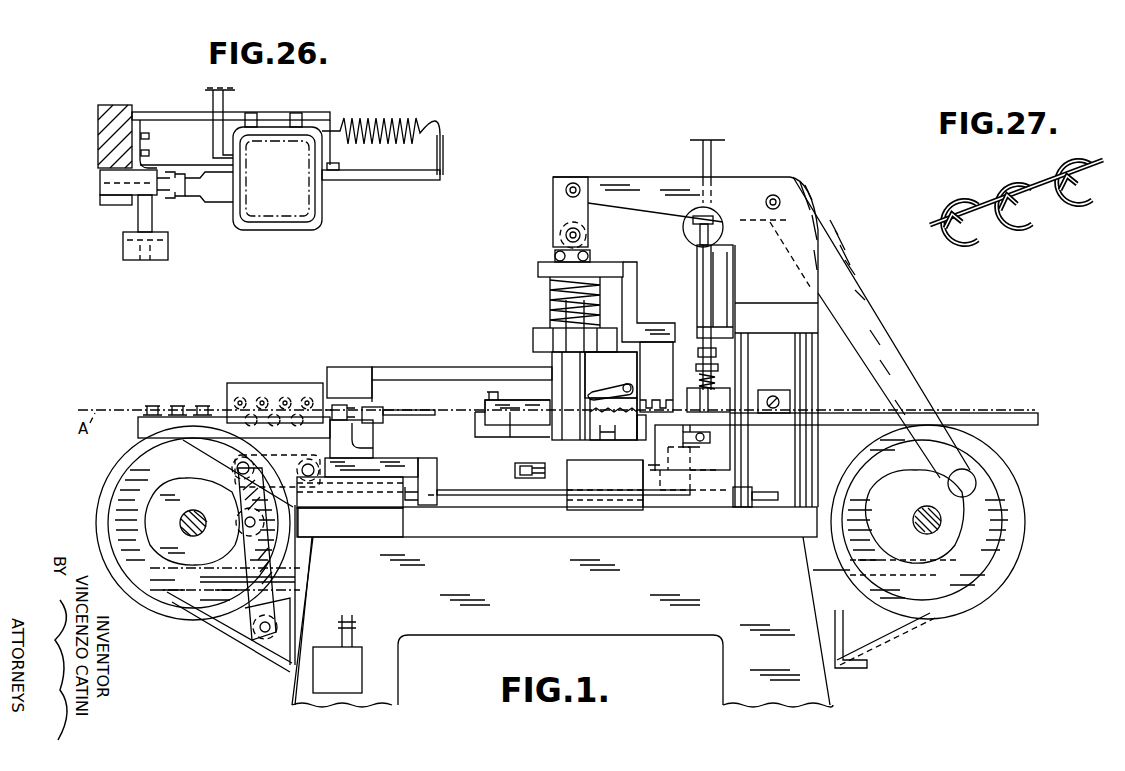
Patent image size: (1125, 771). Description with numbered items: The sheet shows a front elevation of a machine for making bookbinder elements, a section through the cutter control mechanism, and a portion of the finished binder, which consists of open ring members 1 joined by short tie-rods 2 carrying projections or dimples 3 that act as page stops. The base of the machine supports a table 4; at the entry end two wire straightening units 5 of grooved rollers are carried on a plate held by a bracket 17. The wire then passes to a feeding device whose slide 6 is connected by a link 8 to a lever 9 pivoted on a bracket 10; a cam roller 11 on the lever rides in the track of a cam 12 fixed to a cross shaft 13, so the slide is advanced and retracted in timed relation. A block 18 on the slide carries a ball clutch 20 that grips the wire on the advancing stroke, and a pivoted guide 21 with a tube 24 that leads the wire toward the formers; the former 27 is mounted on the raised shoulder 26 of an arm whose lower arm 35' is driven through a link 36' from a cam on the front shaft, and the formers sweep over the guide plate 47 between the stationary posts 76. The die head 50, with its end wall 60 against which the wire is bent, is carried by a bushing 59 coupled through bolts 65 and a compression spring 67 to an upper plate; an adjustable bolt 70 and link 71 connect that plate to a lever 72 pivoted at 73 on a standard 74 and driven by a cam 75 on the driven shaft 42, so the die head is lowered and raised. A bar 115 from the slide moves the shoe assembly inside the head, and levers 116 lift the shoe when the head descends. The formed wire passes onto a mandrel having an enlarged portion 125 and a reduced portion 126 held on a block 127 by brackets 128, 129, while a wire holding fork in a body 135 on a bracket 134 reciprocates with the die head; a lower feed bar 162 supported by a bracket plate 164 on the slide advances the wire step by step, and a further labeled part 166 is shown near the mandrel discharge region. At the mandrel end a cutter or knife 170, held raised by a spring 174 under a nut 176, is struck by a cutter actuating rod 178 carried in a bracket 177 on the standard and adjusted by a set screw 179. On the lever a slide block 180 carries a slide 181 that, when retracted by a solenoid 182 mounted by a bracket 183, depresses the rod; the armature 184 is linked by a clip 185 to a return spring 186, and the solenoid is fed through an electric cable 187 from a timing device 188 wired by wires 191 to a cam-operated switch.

In FIG. 27, the open ring members 1 is at (942, 243).
In FIG. 27, the tie-rods 2 is at (990, 200).
In FIG. 1, the tie-rods 2 is at (130, 380).
In FIG. 27, the projections or dimples 3 is at (1005, 205).
In FIG. 1, the table 4 is at (528, 530).
In FIG. 1, the wire straightening units 5 is at (272, 374).
In FIG. 1, the slide 6 is at (417, 466).
In FIG. 1, the link 8 is at (294, 463).
In FIG. 1, the lever 9 is at (250, 553).
In FIG. 1, the bracket 10 is at (262, 648).
In FIG. 1, the cam roller 11 is at (265, 522).
In FIG. 1, the cam 12 is at (112, 478).
In FIG. 1, the cross shaft 13 is at (182, 521).
In FIG. 1, the bracket 17 is at (375, 508).
In FIG. 1, the block 18 is at (365, 452).
In FIG. 1, the clutch 20 is at (340, 405).
In FIG. 1, the guide 21 is at (385, 408).
In FIG. 1, the tube 24 is at (436, 410).
In FIG. 1, the raised shoulder / block 26 is at (368, 367).
In FIG. 1, the former 27 is at (522, 392).
In FIG. 1, the arm 35' is at (605, 485).
In FIG. 1, the link 36' is at (520, 460).
In FIG. 1, the driven shaft 42 is at (920, 532).
In FIG. 1, the guide plate 47 is at (608, 430).
In FIG. 1, the die head 50 is at (533, 266).
In FIG. 1, the bushing 59 is at (533, 335).
In FIG. 1, the end wall 60 is at (552, 358).
In FIG. 1, the bolts 65 is at (550, 287).
In FIG. 1, the compression spring 67 is at (547, 306).
In FIG. 1, the bolt 70 is at (588, 252).
In FIG. 1, the link 71 is at (553, 217).
In FIG. 26, the lever 72 is at (98, 137).
In FIG. 1, the lever 72 is at (615, 177).
In FIG. 1, the pivot 73 is at (778, 195).
In FIG. 1, the standard 74 is at (822, 232).
In FIG. 1, the cam 75 is at (985, 590).
In FIG. 1, the stationary posts 76 is at (582, 432).
In FIG. 1, the bar 115 is at (452, 367).
In FIG. 1, the levers 116 is at (610, 384).
In FIG. 1, the enlarged portion of mandrel 125 is at (643, 440).
In FIG. 1, the reduced portion of mandrel 126 is at (683, 436).
In FIG. 1, the block 127 is at (647, 500).
In FIG. 1, the bracket 128 is at (648, 460).
In FIG. 1, the bracket 129 is at (722, 451).
In FIG. 1, the bracket 134 is at (628, 303).
In FIG. 1, the body 135 is at (657, 377).
In FIG. 1, the lower feed bar 162 is at (486, 494).
In FIG. 1, the bracket plate 164 is at (437, 467).
In FIG. 1, the cam 166 is at (710, 436).
In FIG. 1, the cutter or knife 170 is at (698, 388).
In FIG. 1, the spring 174 is at (718, 382).
In FIG. 1, the nut 176 is at (718, 368).
In FIG. 1, the bracket 177 is at (733, 283).
In FIG. 26, the cutter actuating rod 178 is at (138, 220).
In FIG. 1, the cutter actuating rod 178 is at (703, 283).
In FIG. 1, the set screw 179 is at (716, 352).
In FIG. 26, the slide block 180 is at (100, 178).
In FIG. 1, the slide block 180 is at (683, 226).
In FIG. 26, the slide 181 is at (100, 200).
In FIG. 1, the slide 181 is at (690, 240).
In FIG. 26, the solenoid 182 is at (282, 230).
In FIG. 26, the bracket 183 is at (183, 120).
In FIG. 26, the armature 184 is at (215, 203).
In FIG. 26, the clip 185 is at (392, 180).
In FIG. 26, the spring 186 is at (377, 118).
In FIG. 26, the electric cable 187 is at (213, 95).
In FIG. 1, the electric cable 187 is at (703, 158).
In FIG. 1, the timing device 188 is at (354, 672).
In FIG. 1, the wires 191 is at (352, 620).